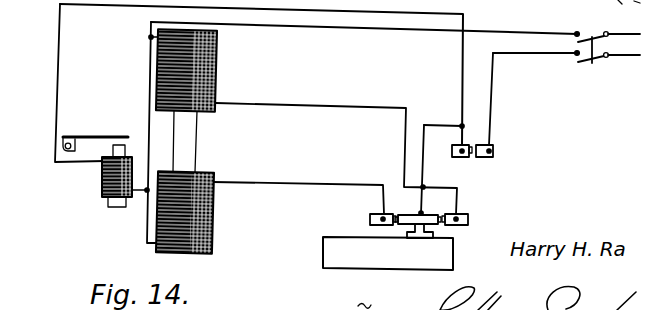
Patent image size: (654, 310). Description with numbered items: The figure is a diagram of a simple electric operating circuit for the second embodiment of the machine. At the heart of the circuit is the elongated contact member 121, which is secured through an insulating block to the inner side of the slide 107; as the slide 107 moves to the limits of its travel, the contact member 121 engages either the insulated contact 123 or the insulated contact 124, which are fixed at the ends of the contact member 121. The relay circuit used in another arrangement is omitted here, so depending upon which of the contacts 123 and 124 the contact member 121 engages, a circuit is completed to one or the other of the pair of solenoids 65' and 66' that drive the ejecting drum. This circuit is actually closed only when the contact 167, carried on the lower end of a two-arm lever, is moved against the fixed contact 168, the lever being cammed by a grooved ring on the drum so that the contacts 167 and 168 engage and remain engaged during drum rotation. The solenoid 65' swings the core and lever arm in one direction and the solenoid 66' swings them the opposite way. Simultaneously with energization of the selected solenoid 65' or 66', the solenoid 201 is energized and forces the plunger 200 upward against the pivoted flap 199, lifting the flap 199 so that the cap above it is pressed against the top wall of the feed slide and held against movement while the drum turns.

The solenoid 66' is at (207, 70).
The solenoid 65' is at (202, 212).
The pivoted flap 199 is at (97, 135).
The plunger 200 is at (112, 148).
The solenoid 201 is at (101, 180).
The insulated contact 123 is at (387, 213).
The insulated contact 124 is at (447, 213).
The elongated contact member 121 is at (412, 225).
The slide 107 is at (362, 257).
The contact 167 is at (474, 145).
The fixed contact 168 is at (470, 158).